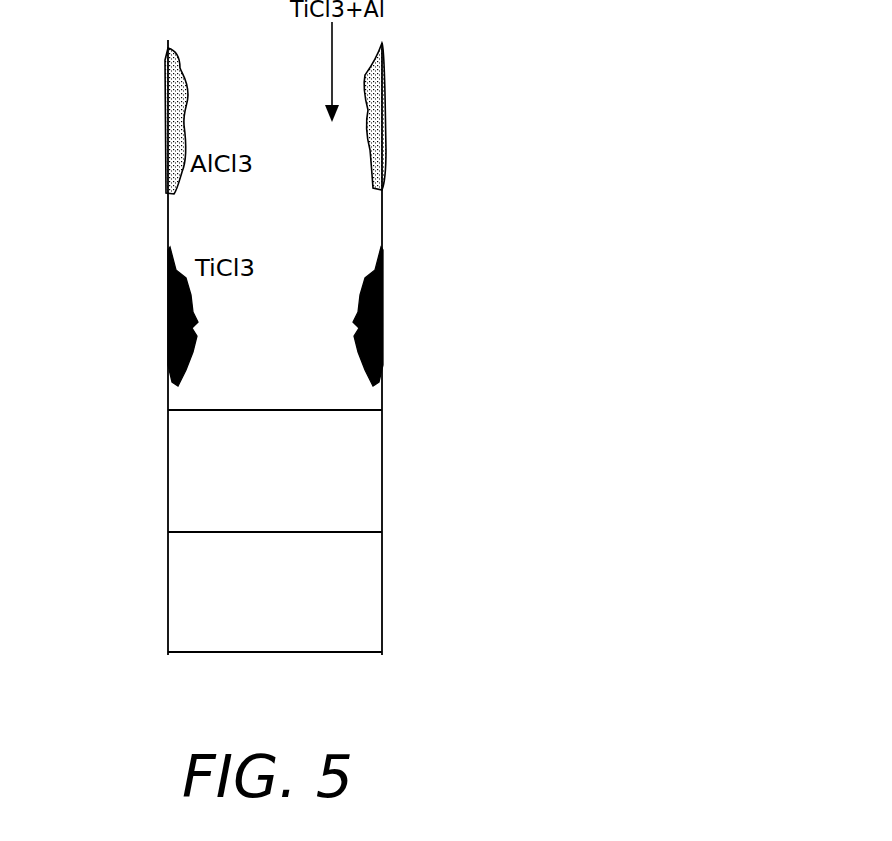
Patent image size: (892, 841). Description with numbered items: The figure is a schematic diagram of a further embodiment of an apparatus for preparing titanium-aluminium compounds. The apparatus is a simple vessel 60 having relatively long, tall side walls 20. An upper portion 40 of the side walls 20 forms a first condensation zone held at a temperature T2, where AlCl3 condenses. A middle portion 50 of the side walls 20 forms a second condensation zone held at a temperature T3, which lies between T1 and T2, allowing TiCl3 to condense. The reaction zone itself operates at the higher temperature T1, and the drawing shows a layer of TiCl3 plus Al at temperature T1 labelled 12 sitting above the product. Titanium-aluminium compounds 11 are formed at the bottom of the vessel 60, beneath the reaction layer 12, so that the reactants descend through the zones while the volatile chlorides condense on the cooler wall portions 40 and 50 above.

The titanium-aluminium compounds 11 is at (371, 622).
The TiCl3+Al layer at temperature T1 12 is at (383, 491).
The side walls 20 is at (387, 383).
The upper portion of the side walls 40 is at (387, 93).
The middle portion of the side walls 50 is at (385, 268).
The vessel 60 is at (505, 412).